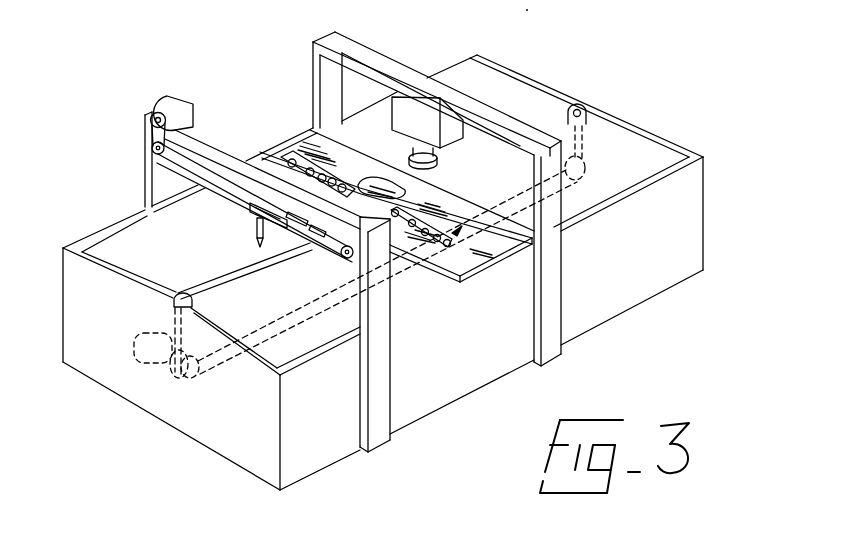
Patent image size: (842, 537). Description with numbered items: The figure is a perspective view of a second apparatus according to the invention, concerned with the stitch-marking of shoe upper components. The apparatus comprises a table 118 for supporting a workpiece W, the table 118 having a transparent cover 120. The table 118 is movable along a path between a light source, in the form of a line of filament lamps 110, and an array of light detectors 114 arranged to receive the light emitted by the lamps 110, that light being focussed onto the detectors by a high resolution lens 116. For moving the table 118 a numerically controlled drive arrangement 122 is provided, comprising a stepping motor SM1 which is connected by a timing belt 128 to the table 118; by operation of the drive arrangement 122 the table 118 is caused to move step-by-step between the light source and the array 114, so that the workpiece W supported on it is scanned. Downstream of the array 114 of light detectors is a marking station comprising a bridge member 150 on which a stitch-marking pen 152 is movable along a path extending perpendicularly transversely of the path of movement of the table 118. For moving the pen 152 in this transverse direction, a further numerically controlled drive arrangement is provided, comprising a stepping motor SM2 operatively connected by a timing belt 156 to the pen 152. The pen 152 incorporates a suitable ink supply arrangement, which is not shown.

The line of filament lamps 110 is at (445, 249).
The array of light detectors 114 is at (427, 122).
The high resolution lens 116 is at (412, 161).
The table 118 is at (413, 250).
The transparent cover 120 is at (492, 237).
The numerically controlled drive arrangement 122 is at (148, 323).
The timing belt 128 is at (226, 278).
The bridge member 150 is at (217, 138).
The stitch-marking pen 152 is at (259, 248).
The timing belt 156 is at (170, 171).
The stepping motor SM1 is at (150, 364).
The stepping motor SM2 is at (188, 108).
The workpiece W is at (408, 187).